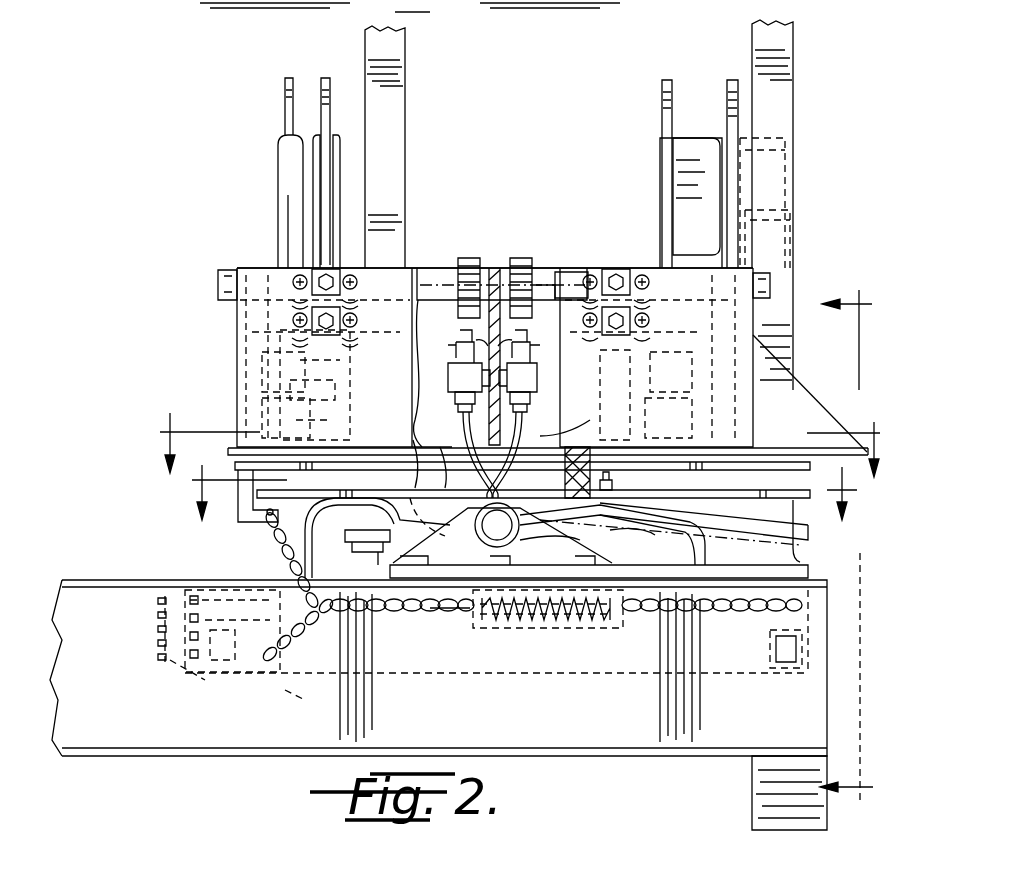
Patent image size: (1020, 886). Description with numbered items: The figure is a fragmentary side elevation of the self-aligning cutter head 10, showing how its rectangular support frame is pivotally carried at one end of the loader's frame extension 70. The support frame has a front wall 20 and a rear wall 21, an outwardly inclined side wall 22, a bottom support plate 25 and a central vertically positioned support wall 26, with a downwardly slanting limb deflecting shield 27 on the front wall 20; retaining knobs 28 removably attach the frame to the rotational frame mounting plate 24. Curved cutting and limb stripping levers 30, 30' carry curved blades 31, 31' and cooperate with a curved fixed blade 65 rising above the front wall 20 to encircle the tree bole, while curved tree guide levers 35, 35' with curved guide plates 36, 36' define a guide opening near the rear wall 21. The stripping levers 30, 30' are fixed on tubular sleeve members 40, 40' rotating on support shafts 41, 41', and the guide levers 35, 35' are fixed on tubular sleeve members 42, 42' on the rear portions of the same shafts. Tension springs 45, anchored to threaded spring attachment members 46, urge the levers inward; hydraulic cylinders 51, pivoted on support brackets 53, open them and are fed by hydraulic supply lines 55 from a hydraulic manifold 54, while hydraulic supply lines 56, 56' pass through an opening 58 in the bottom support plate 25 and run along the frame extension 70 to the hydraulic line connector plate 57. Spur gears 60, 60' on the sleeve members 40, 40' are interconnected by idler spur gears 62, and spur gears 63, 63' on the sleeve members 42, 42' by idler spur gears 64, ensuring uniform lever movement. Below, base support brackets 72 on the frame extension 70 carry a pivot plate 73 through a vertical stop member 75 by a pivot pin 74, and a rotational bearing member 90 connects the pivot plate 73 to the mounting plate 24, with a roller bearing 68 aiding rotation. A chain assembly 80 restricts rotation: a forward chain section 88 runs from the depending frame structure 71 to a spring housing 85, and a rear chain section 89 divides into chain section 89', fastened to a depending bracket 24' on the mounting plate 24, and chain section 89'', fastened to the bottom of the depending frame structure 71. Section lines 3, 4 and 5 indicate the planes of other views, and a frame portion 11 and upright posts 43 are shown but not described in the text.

The self-aligning cutter head 10 is at (203, 243).
The frame 11 is at (412, 7).
The front wall 20 is at (752, 344).
The rear wall 21 is at (262, 312).
The side wall 22 is at (285, 345).
The rotational frame mounting plate 24 is at (451, 463).
The depending bracket 24' is at (215, 509).
The bottom support plate 25 is at (240, 452).
The central support wall 26 is at (432, 332).
The limb deflecting shield 27 is at (792, 386).
The retaining knobs 28 is at (262, 432).
The curved cutting and limb stripping lever 30 is at (720, 152).
The curved cutting and limb stripping lever 30' is at (649, 153).
The curved blade 31 is at (797, 192).
The curved blade 31' is at (661, 180).
The curved tree guide lever 35 is at (315, 149).
The curved tree guide lever 35' is at (259, 89).
The curved guide plate 36 is at (355, 190).
The curved guide plate 36' is at (254, 191).
The tubular sleeve member 40 is at (591, 242).
The tubular sleeve member 40' is at (591, 242).
The support shaft 41 is at (484, 259).
The support shaft 41' is at (484, 259).
The tubular sleeve member 42 is at (502, 242).
The tubular sleeve member 42' is at (502, 242).
The upright post 43 is at (398, 78).
The tension springs 45 is at (266, 258).
The spring attachment members 46 is at (316, 278).
The hydraulic cylinders 51 is at (268, 378).
The support brackets 53 is at (268, 412).
The hydraulic manifold 54 is at (452, 376).
The hydraulic supply line 55 is at (322, 380).
The hydraulic supply line 56 is at (386, 590).
The hydraulic supply line 56' is at (386, 590).
The hydraulic line connector plate 57 is at (166, 602).
The opening 58 is at (470, 450).
The spur gear 60 is at (566, 237).
The spur gear 60' is at (566, 237).
The idler spur gears 62 is at (540, 292).
The spur gear 63 is at (483, 237).
The spur gear 63' is at (483, 237).
The idler spur gears 64 is at (432, 292).
The curved fixed blade 65 is at (778, 212).
The roller bearing 68 is at (422, 460).
The frame extension 70 is at (664, 757).
The depending frame structure 71 is at (716, 682).
The base support brackets 72 is at (568, 546).
The pivot plate 73 is at (796, 540).
The pivot pin 74 is at (492, 530).
The vertical stop member 75 is at (710, 536).
The chain assembly 80 is at (438, 638).
The spring housing 85 is at (538, 640).
The forward chain section 88 is at (710, 620).
The rear chain section 89 is at (566, 631).
The chain section 89' is at (275, 587).
The chain section 89'' is at (520, 667).
The rotational bearing member 90 is at (616, 474).
The section line 3 is at (517, 435).
The section line 4 is at (516, 492).
The section line 5 is at (846, 548).